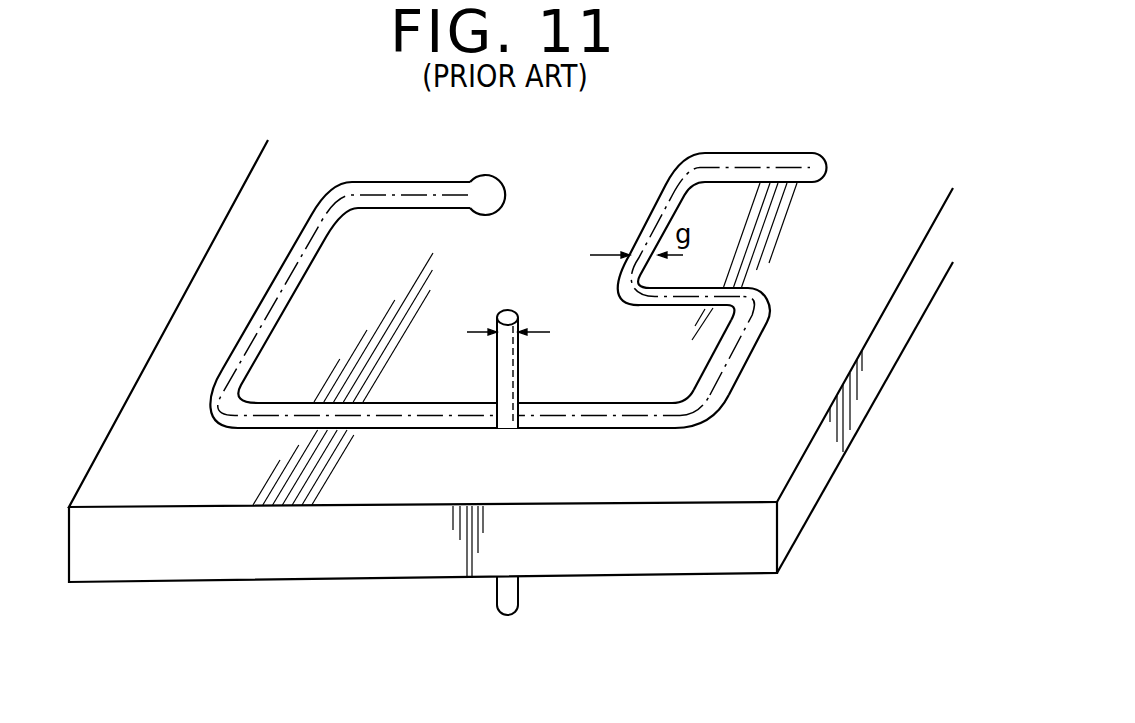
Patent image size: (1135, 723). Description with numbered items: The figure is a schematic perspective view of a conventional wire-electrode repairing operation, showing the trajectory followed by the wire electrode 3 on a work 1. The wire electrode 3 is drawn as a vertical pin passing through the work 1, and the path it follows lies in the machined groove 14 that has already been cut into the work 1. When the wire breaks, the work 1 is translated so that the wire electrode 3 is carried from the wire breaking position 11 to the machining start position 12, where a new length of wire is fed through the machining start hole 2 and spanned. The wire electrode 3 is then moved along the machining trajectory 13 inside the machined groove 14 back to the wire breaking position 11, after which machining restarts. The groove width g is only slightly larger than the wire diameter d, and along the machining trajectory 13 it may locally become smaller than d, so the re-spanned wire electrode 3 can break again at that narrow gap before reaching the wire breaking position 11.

The work 1 is at (133, 422).
The machining start hole 2 is at (463, 175).
The wire electrode 3 is at (518, 370).
The wire breaking position 11 is at (820, 163).
The machining start position 12 is at (477, 192).
The machining trajectory 13 is at (735, 352).
The machined groove 14 is at (730, 390).